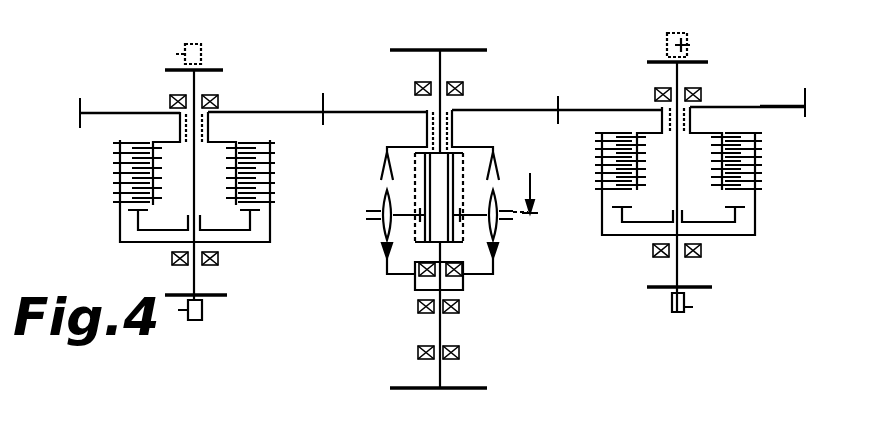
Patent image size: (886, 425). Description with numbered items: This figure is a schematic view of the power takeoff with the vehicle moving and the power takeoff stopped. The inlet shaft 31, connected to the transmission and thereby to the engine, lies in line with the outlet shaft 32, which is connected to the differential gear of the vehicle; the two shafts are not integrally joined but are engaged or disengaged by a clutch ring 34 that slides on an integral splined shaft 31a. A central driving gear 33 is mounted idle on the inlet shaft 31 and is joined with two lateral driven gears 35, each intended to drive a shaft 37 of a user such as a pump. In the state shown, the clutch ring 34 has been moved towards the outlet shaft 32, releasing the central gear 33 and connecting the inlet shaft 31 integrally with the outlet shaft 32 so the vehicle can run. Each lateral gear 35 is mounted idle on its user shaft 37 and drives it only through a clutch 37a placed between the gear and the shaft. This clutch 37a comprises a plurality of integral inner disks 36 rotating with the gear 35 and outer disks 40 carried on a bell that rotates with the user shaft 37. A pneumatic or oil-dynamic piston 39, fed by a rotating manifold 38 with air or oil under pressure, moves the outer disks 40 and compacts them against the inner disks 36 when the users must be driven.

The inlet shaft 31 is at (445, 47).
The splined shaft 31a is at (413, 240).
The outlet shaft 32 is at (438, 390).
The central driving gear 33 is at (493, 102).
The clutch ring 34 is at (385, 212).
The lateral driven gear 35 is at (758, 103).
The inner disks 36 is at (648, 192).
The shaft of a user 37 is at (693, 57).
The clutch 37a is at (772, 171).
The manifold 38 is at (690, 307).
The piston 39 is at (745, 237).
The outer disks 40 is at (598, 195).